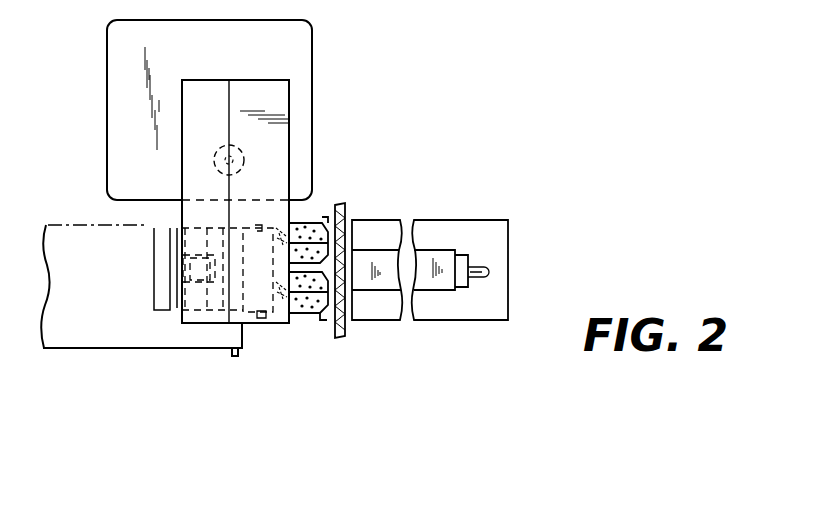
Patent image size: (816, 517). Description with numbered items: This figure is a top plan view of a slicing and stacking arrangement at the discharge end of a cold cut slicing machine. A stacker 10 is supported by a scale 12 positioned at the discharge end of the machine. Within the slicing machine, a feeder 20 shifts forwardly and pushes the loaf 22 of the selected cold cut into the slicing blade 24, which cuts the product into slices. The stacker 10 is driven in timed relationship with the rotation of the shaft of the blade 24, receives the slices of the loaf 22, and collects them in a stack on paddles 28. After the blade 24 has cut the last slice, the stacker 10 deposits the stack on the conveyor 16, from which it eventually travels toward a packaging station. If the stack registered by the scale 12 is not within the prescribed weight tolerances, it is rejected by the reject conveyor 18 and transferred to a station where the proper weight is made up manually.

The stacker 10 is at (285, 50).
The scale 12 is at (107, 130).
The conveyor 16 is at (275, 317).
The reject conveyor 18 is at (112, 350).
The feeder 20 is at (463, 256).
The loaf 22 is at (445, 302).
The slicing blade 24 is at (347, 207).
The paddles 28 is at (314, 320).